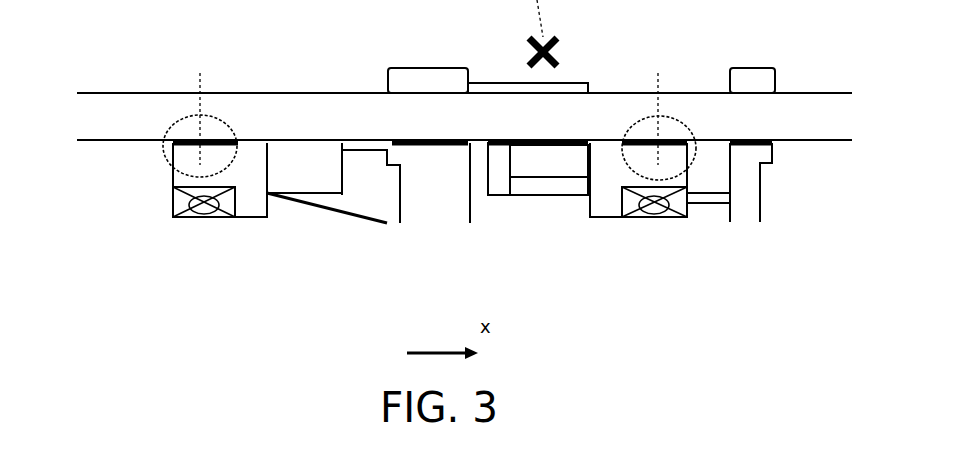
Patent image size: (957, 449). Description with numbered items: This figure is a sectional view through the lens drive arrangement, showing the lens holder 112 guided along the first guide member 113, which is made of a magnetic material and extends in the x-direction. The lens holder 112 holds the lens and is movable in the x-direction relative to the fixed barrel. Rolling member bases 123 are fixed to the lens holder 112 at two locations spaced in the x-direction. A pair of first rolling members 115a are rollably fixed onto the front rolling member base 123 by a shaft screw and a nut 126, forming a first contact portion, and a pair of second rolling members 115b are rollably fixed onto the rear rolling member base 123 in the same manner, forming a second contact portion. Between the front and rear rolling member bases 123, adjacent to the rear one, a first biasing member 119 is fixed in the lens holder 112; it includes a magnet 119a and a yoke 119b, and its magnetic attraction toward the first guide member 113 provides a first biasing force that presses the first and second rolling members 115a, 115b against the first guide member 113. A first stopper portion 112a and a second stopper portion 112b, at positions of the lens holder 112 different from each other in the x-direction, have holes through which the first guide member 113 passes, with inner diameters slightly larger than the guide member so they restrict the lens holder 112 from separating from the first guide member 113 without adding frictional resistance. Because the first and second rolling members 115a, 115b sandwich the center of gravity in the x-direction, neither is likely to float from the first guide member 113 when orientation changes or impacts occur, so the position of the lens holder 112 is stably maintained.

The first guide member 113 is at (317, 107).
The lens holder 112 is at (305, 183).
The first stopper portion 112a is at (428, 80).
The second stopper portion 112b is at (748, 80).
The first rolling members 115a is at (198, 133).
The second rolling members 115b is at (655, 132).
The first biasing member 119 is at (460, 231).
The magnet 119a is at (530, 172).
The yoke 119b is at (540, 195).
The rolling member base 123 is at (252, 197).
The nut 126 is at (175, 220).